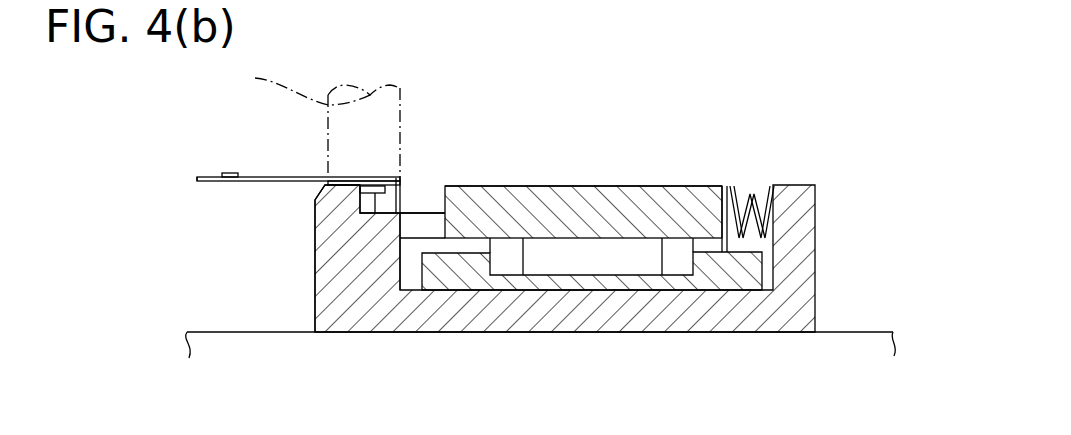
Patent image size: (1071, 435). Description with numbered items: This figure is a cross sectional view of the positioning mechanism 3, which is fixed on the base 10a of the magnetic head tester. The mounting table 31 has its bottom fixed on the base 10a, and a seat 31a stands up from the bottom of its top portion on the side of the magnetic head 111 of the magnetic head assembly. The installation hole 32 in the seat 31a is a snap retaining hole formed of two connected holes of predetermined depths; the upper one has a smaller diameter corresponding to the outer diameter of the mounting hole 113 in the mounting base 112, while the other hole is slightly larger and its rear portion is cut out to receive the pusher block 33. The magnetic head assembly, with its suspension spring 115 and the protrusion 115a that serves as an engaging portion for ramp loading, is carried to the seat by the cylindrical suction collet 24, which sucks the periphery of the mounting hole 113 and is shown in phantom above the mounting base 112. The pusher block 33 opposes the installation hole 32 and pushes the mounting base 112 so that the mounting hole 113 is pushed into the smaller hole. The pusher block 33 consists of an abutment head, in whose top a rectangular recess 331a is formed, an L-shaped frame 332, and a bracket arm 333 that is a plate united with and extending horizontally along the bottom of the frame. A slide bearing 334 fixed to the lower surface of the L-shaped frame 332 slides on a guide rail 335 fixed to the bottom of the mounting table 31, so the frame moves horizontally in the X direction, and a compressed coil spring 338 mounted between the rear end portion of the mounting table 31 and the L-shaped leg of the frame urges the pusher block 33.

The positioning mechanism 3 is at (638, 172).
The base 10a is at (852, 333).
The cylindrical suction collet 24 is at (310, 120).
The mounting table 31 is at (453, 318).
The seat 31a is at (330, 258).
The installation hole 32 is at (396, 201).
The pusher block 33 is at (660, 170).
The magnetic head 111 is at (223, 173).
The mounting base 112 is at (360, 177).
The mounting hole 113 is at (402, 187).
The suspension spring 115 is at (270, 190).
The protrusion 115a is at (197, 183).
The rectangular recess 331a is at (462, 187).
The L-shaped frame 332 is at (578, 223).
The bracket arm 333 is at (413, 223).
The slide bearing 334 is at (634, 262).
The guide rail 335 is at (490, 273).
The coil spring 338 is at (753, 188).